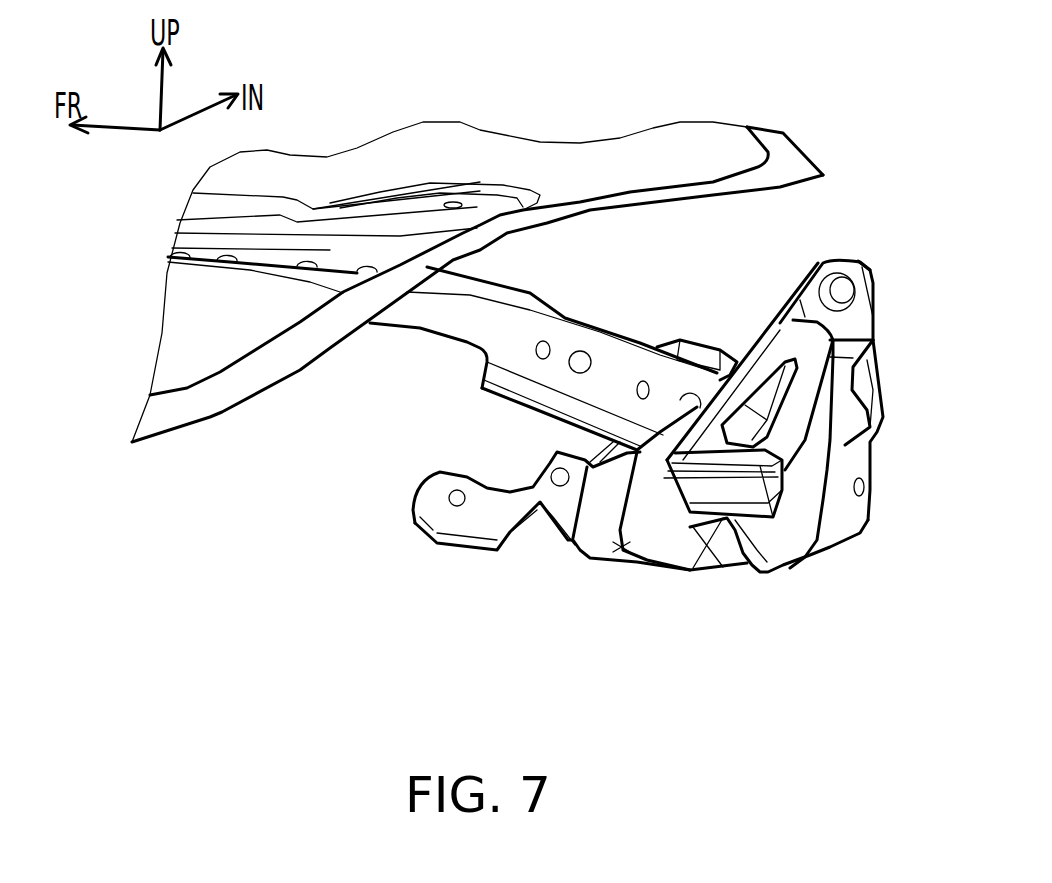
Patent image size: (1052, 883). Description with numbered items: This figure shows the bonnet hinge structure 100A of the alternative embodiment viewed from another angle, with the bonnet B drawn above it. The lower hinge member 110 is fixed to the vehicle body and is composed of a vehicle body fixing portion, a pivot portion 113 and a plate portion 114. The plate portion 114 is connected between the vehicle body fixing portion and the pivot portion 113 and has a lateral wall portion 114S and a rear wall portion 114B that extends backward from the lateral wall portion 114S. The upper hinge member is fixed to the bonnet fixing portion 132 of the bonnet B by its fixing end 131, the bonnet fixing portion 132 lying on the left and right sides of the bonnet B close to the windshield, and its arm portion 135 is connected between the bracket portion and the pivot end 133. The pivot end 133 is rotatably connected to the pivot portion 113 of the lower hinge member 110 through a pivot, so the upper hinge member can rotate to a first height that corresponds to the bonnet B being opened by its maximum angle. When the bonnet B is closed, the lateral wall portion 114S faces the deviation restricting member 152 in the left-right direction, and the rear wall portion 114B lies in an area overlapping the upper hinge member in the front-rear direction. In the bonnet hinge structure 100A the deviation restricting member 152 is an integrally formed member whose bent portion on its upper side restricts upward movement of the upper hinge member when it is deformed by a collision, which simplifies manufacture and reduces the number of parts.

The bonnet B is at (693, 140).
The fixing end 131 is at (350, 260).
The bonnet fixing portion 132 is at (293, 192).
The pivot end 133 is at (861, 265).
The pivot portion 113 is at (824, 270).
The deviation restricting member 152 is at (698, 352).
The arm portion 135 is at (513, 348).
The lower hinge member 110 is at (437, 504).
The plate portion 114 is at (772, 454).
The lateral wall portion 114S is at (667, 537).
The rear wall portion 114B is at (842, 528).
The bonnet hinge structure 100A is at (173, 604).